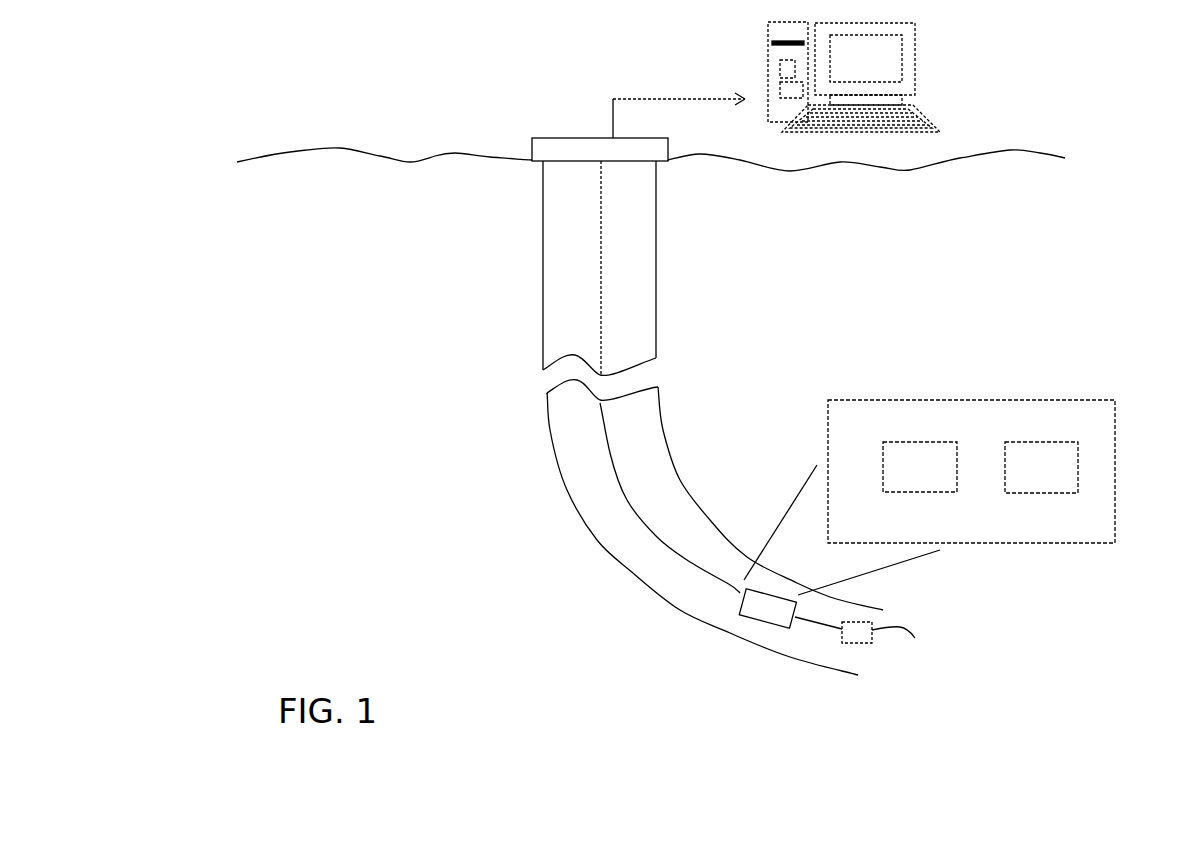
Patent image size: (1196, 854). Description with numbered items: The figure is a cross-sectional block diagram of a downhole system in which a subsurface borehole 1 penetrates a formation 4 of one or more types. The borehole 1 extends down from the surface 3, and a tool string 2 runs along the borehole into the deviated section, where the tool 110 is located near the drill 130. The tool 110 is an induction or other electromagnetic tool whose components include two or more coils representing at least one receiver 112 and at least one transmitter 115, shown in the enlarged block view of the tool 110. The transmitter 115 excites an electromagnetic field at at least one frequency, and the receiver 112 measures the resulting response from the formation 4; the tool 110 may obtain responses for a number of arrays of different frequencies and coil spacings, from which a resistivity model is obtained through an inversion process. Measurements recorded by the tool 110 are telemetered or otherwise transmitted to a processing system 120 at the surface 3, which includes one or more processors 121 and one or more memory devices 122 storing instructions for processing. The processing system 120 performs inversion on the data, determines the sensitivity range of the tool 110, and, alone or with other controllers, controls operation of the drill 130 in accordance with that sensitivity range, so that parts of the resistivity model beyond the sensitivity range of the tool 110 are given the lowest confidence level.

The subsurface borehole 1 is at (659, 217).
The tool string 2 is at (592, 270).
The surface 3 is at (711, 155).
The formation 4 is at (764, 350).
The tool 110 is at (753, 621).
The receiver 112 is at (920, 467).
The transmitter 115 is at (1041, 467).
The processing system 120 is at (776, 80).
The processor 121 is at (780, 68).
The memory device 122 is at (780, 91).
The drill 130 is at (871, 641).